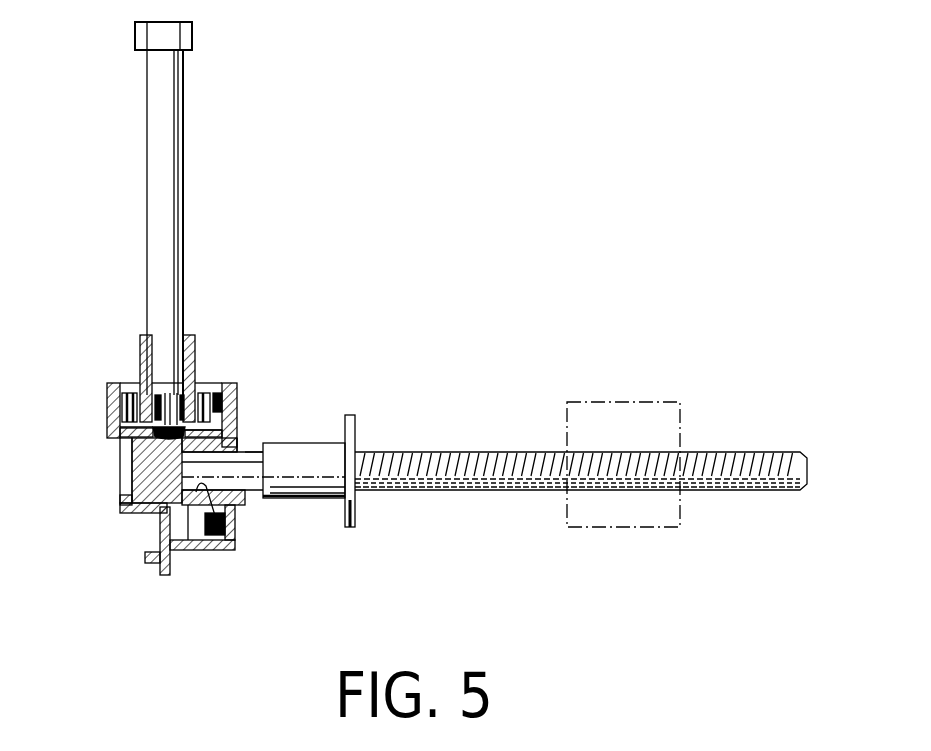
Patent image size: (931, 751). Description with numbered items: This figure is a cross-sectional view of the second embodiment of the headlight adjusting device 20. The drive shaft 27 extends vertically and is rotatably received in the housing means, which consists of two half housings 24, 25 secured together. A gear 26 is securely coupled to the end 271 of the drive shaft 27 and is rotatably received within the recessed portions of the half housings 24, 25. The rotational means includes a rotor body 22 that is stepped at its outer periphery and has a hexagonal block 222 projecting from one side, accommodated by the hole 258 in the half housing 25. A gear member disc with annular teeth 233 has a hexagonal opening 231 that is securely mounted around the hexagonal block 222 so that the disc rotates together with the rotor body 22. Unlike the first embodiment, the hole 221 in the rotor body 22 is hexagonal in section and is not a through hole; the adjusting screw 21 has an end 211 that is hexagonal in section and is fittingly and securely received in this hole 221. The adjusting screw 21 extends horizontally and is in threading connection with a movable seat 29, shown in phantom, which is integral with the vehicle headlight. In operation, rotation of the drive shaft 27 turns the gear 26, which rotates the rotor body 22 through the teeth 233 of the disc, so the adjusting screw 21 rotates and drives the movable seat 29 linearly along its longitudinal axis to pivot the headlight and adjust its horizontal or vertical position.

The headlight adjusting device 20 is at (402, 292).
The adjusting screw 21 is at (387, 440).
The end of adjusting screw 211 is at (245, 450).
The rotor body 22 is at (140, 492).
The hole in rotor body 221 is at (220, 550).
The hexagonal block 222 is at (237, 513).
The hexagonal opening 231 is at (225, 447).
The teeth 233 is at (192, 548).
The half housing 24 is at (117, 384).
The half housing 25 is at (212, 383).
The hole in half housing 258 is at (233, 440).
The gear 26 is at (196, 395).
The drive shaft 27 is at (176, 180).
The end of drive shaft 271 is at (152, 396).
The movable seat 29 is at (680, 518).